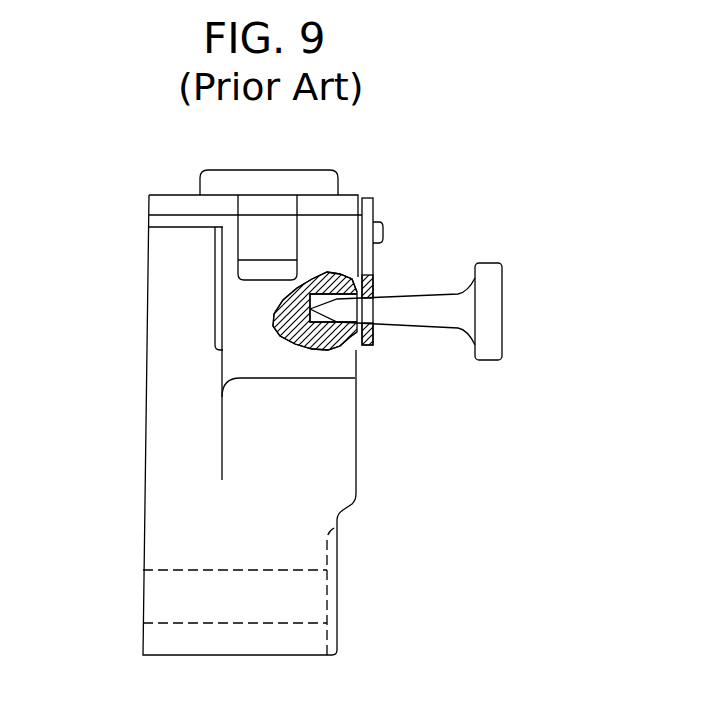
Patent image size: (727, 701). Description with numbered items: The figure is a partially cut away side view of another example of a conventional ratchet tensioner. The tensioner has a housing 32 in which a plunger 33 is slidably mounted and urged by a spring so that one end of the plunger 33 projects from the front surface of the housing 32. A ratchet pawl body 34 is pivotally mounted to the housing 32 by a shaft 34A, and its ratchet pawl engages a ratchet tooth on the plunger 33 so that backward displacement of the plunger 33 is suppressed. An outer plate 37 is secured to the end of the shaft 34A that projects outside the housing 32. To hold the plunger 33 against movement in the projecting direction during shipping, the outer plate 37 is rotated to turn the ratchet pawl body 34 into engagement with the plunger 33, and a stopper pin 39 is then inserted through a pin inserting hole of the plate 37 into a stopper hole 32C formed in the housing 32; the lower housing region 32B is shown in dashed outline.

The housing 32 is at (198, 487).
The housing bottom portion 32B is at (165, 598).
The stopper hole 32C is at (320, 323).
The plunger 33 is at (307, 180).
The ratchet pawl body 34 is at (255, 228).
The shaft 34A is at (383, 230).
The plate 37 is at (370, 207).
The stopper pin 39 is at (487, 330).